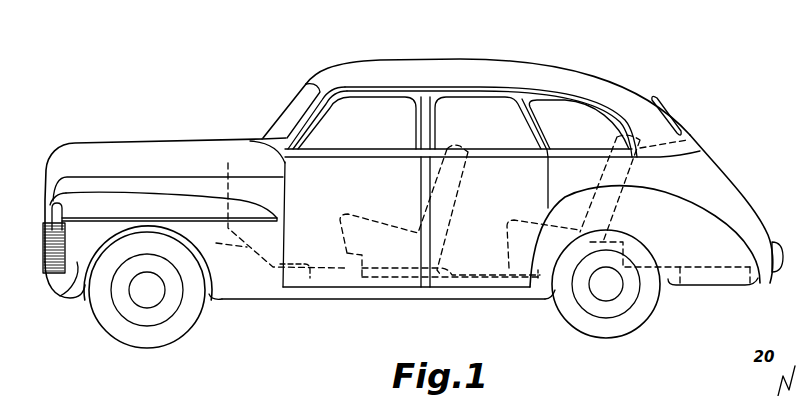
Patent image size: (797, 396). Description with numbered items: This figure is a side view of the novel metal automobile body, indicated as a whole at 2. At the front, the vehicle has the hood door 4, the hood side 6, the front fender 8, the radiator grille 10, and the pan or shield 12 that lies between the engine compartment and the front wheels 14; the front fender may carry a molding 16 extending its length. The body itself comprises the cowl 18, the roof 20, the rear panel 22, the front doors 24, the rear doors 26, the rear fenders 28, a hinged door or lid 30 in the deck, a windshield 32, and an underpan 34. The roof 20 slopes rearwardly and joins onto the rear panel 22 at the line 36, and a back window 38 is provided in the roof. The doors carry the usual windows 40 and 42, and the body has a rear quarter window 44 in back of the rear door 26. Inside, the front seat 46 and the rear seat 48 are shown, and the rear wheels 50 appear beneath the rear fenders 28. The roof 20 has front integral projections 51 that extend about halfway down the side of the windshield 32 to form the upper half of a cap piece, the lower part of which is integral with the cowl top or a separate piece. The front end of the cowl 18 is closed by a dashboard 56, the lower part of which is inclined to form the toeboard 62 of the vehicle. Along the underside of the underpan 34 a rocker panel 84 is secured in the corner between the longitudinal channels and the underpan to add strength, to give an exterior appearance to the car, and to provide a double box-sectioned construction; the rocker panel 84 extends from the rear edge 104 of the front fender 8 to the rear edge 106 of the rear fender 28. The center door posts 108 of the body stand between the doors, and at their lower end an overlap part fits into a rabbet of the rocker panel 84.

The body 2 is at (607, 88).
The hood door 4 is at (110, 153).
The hood side 6 is at (160, 178).
The front fender 8 is at (70, 278).
The radiator grille 10 is at (52, 242).
The pan or shield 12 is at (212, 294).
The front wheels 14 is at (157, 335).
The molding 16 is at (80, 215).
The cowl 18 is at (267, 145).
The roof 20 is at (402, 72).
The rear panel 22 is at (681, 170).
The front doors 24 is at (325, 262).
The rear doors 26 is at (485, 258).
The rear fenders 28 is at (700, 257).
The hinged door or lid 30 is at (735, 190).
The windshield 32 is at (287, 125).
The underpan 34 is at (310, 278).
The line 36 is at (661, 150).
The back window 38 is at (652, 100).
The window 40 is at (357, 107).
The window 42 is at (468, 102).
The rear quarter window 44 is at (555, 112).
The front seat 46 is at (388, 225).
The rear seat 48 is at (523, 225).
The rear wheels 50 is at (612, 325).
The front integral projections 51 is at (313, 112).
The dashboard 56 is at (228, 163).
The toeboard 62 is at (221, 239).
The rocker panel 84 is at (391, 290).
The rear edge of the front fender 104 is at (280, 292).
The rear edge of the rear fender 106 is at (541, 296).
The center door posts 108 is at (428, 283).